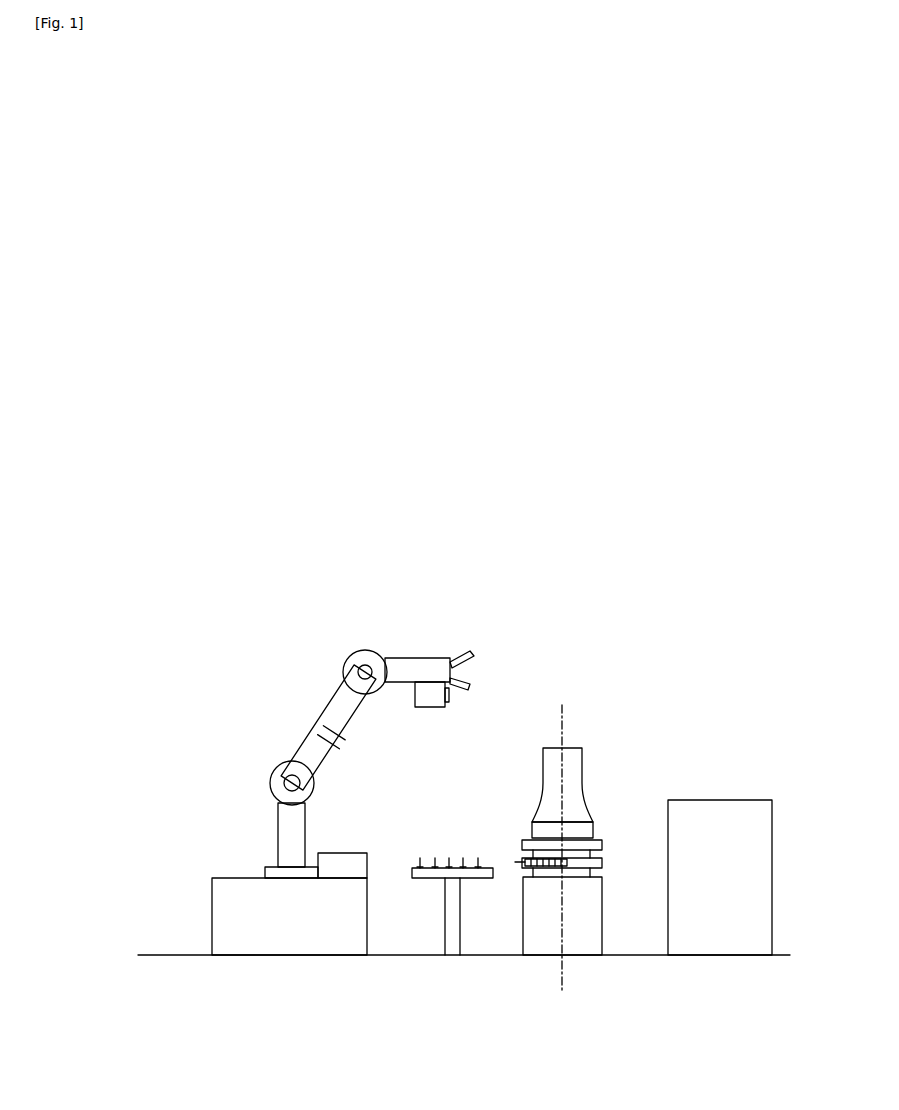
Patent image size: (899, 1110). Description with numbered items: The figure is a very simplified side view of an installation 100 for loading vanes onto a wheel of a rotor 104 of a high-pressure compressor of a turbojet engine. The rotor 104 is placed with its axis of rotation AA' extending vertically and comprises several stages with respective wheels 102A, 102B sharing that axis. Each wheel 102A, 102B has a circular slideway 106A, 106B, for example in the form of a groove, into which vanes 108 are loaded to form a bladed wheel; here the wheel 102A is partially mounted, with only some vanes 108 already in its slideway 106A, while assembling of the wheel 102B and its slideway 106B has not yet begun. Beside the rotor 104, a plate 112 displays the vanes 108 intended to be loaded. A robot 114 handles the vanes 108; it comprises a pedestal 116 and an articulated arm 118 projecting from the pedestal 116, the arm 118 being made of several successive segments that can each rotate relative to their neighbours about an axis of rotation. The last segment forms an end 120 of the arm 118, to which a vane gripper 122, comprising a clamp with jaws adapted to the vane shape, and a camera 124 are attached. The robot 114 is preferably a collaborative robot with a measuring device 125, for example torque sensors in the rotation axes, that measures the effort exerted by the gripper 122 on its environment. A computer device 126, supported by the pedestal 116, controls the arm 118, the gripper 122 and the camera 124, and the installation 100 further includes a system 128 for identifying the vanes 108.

The installation 100 is at (628, 600).
The wheel 102A is at (603, 862).
The wheel 102B is at (603, 844).
The rotor 104 is at (580, 779).
The circular slideway 106A is at (572, 867).
The circular slideway 106B is at (532, 838).
The vanes 108 is at (510, 862).
The plate 112 is at (470, 878).
The robot 114 is at (238, 662).
The pedestal 116 is at (289, 911).
The articulated arm 118 is at (318, 770).
The end of the articulated arm 120 is at (392, 658).
The vane gripper 122 is at (472, 652).
The camera 124 is at (423, 710).
The measuring device 125 is at (322, 690).
The computer device 126 is at (338, 858).
The system for identifying the vanes 128 is at (720, 877).